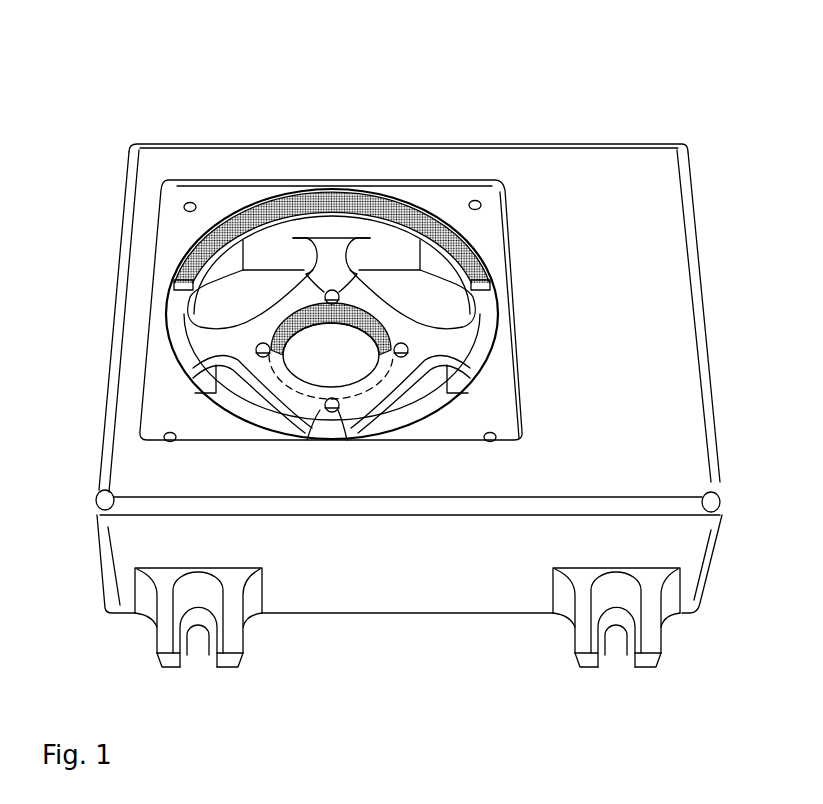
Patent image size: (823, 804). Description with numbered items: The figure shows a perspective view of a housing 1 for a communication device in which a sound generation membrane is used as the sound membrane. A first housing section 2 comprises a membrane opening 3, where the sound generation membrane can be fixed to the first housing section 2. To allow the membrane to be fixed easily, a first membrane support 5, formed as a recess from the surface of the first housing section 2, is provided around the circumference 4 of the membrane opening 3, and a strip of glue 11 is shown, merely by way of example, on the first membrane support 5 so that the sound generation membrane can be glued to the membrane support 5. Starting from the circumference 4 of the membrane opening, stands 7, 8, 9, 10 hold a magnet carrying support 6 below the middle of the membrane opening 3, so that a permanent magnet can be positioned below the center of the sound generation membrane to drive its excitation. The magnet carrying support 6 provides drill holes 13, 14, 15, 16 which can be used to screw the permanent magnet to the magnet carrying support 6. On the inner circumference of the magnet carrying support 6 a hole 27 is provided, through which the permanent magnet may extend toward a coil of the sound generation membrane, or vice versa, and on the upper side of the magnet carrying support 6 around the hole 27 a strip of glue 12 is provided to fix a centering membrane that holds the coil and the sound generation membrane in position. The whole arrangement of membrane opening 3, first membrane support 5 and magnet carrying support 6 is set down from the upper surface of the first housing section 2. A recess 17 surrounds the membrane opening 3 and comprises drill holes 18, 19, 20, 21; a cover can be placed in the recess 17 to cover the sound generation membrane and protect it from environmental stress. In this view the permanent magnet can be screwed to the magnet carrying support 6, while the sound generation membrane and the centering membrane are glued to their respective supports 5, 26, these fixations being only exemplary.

The housing 1 is at (675, 82).
The first housing section 2 is at (697, 220).
The membrane opening 3 is at (228, 405).
The circumference 4 is at (178, 321).
The first membrane support 5 is at (170, 295).
The magnet carrying support 6 is at (236, 370).
The stand 7 is at (190, 347).
The stand 8 is at (334, 250).
The stand 9 is at (335, 437).
The stand 10 is at (460, 344).
The strip of glue 11 is at (405, 198).
The strip of glue 12 is at (370, 217).
The drill hole 13 is at (330, 290).
The drill hole 14 is at (263, 357).
The drill hole 15 is at (333, 412).
The drill hole 16 is at (402, 357).
The recess 17 is at (175, 226).
The drill hole 18 is at (190, 202).
The drill hole 19 is at (475, 200).
The drill hole 20 is at (164, 436).
The drill hole 21 is at (496, 436).
The support 26 is at (393, 337).
The hole 27 is at (308, 347).